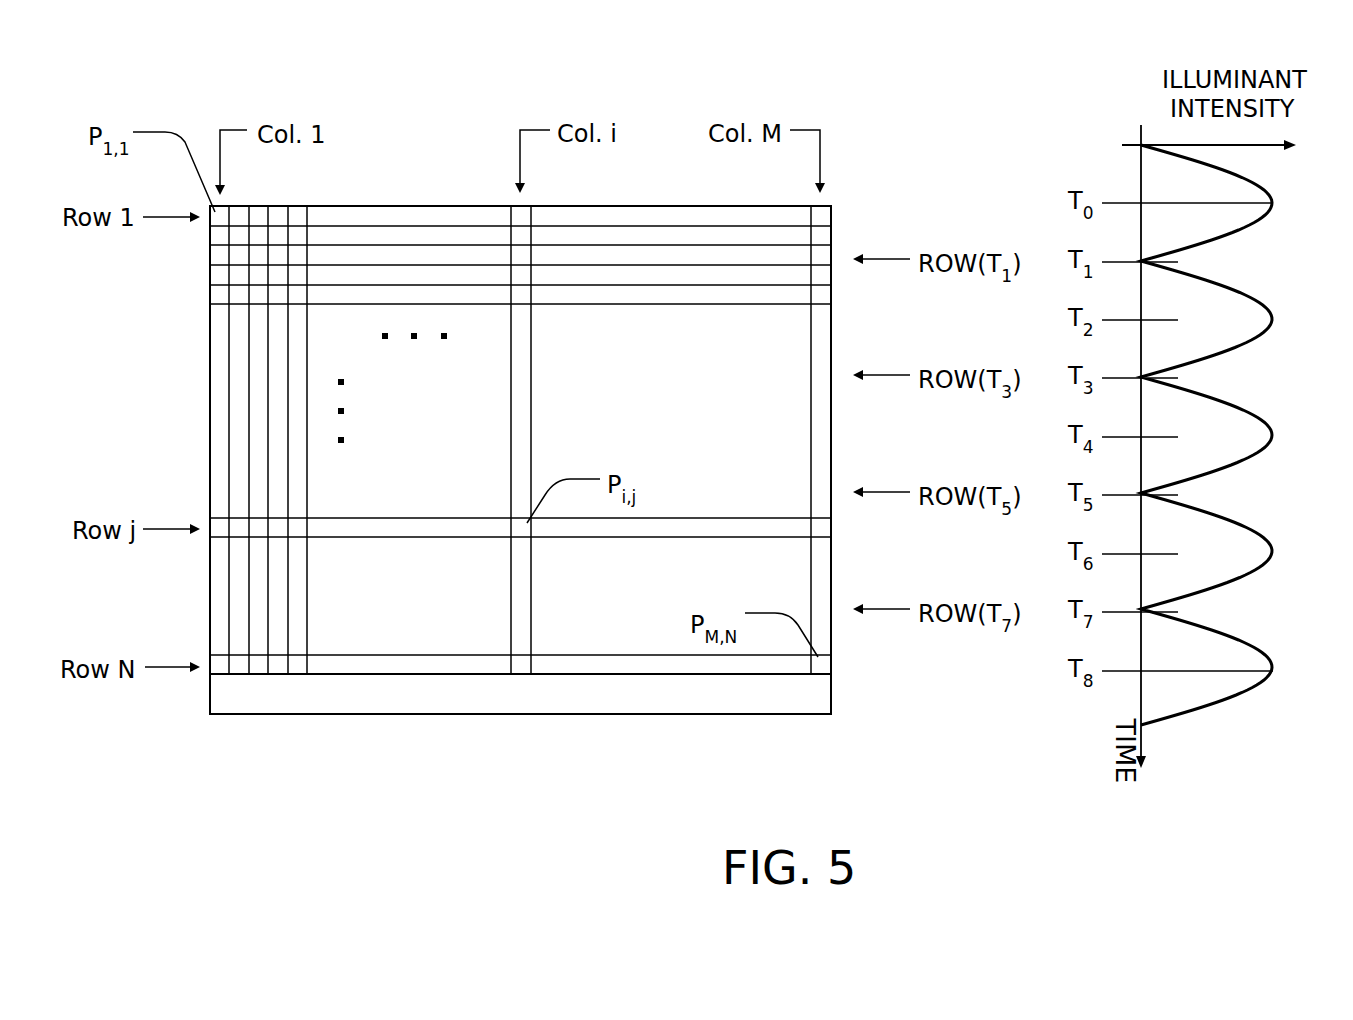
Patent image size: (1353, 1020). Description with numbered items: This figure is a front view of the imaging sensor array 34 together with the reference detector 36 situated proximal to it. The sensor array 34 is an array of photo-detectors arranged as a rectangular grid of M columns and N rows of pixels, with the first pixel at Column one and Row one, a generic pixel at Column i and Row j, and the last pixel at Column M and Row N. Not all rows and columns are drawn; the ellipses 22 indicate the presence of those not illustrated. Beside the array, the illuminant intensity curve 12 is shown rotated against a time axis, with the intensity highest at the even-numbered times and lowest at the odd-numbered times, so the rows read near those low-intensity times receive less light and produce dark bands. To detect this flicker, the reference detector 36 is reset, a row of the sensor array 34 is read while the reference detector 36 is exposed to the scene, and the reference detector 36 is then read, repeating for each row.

The imaging sensor array 34 is at (398, 100).
The reference detector 36 is at (822, 693).
The ellipses 22 is at (341, 411).
The illuminant intensity curve 12 is at (1257, 297).